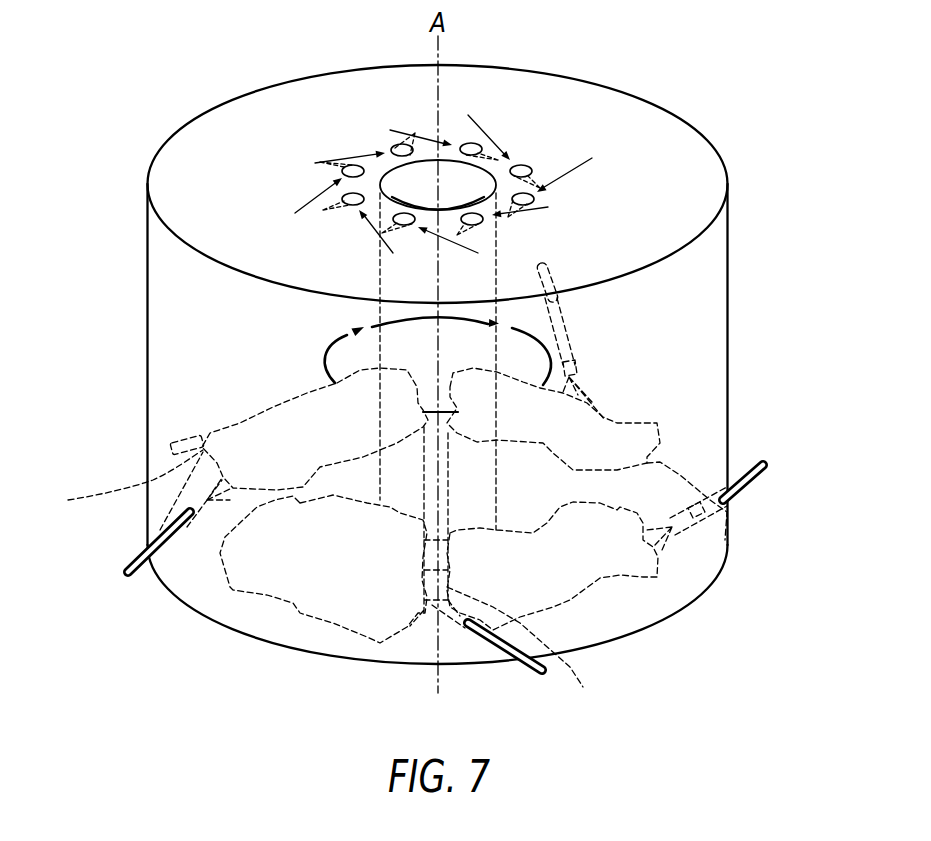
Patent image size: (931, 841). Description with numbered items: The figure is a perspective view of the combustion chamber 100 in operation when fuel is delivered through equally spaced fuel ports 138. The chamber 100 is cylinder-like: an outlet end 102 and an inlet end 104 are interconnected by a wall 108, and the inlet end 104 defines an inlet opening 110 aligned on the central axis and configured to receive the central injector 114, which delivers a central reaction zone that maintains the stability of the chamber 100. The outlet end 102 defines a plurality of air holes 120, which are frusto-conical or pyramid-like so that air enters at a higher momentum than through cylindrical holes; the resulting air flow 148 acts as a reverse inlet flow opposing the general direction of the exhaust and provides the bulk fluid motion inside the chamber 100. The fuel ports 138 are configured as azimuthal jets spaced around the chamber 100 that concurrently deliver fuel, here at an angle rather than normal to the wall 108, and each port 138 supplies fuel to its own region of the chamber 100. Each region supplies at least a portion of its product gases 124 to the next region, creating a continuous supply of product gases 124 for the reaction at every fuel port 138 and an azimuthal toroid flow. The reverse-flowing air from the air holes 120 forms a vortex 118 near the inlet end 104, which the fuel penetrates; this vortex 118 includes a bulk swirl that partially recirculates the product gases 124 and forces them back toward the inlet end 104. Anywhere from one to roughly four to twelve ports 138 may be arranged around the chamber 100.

The combustion chamber 100 is at (186, 77).
The outlet end 102 is at (675, 157).
The inlet end 104 is at (601, 645).
The wall 108 is at (729, 218).
The inlet opening 110 is at (432, 177).
The central injector 114 is at (570, 667).
The vortex 118 is at (675, 570).
The air holes 120 is at (472, 170).
The product gases 124 is at (336, 440).
The fuel ports 138 is at (573, 347).
The air flow 148 is at (307, 200).